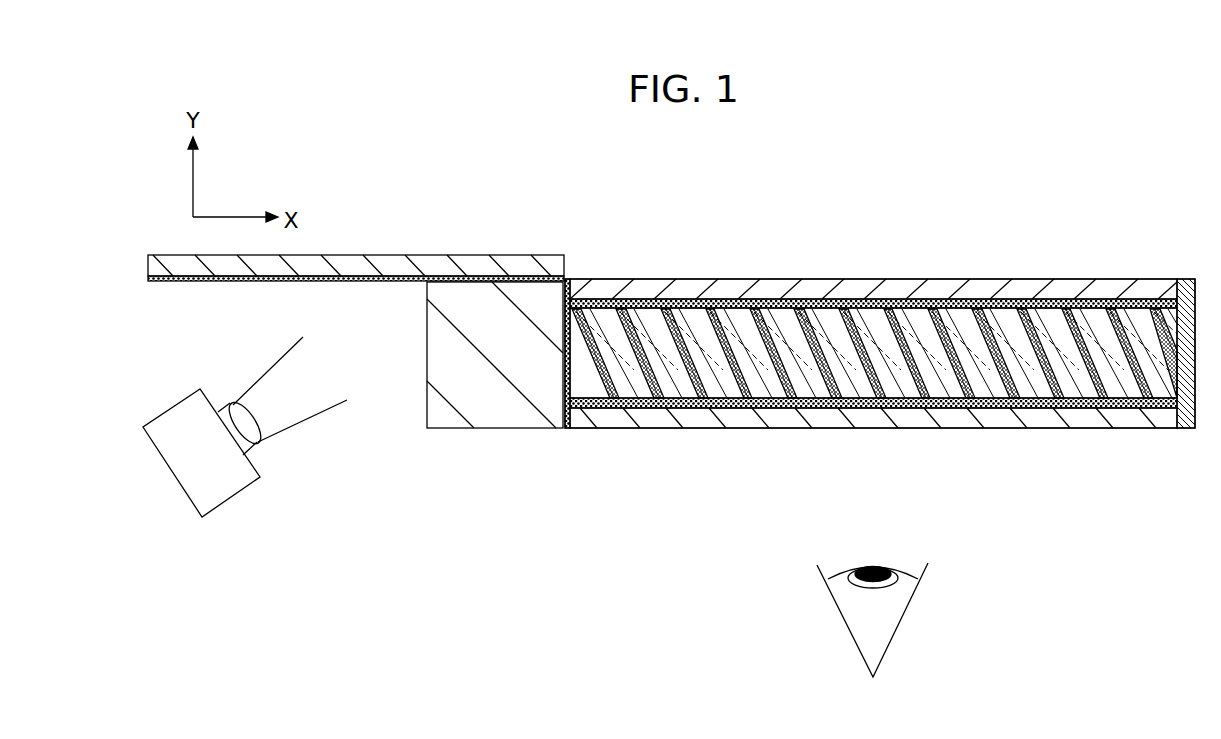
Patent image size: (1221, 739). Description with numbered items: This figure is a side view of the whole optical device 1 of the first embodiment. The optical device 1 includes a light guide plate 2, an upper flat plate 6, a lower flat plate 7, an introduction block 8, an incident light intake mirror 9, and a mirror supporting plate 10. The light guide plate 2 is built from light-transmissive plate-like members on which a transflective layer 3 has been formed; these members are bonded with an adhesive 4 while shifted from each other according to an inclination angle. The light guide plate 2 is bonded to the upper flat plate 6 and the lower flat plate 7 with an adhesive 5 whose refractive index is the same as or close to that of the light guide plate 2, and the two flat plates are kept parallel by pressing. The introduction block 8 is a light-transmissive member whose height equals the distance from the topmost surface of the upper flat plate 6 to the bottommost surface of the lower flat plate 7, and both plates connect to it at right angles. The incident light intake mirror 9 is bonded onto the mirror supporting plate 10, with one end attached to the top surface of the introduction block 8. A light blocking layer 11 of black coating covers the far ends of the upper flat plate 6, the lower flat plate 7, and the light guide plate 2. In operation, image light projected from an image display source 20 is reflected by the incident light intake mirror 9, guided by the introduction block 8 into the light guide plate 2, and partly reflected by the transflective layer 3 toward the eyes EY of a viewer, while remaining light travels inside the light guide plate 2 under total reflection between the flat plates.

The optical device 1 is at (1082, 222).
The light guide plate 2 is at (772, 320).
The transflective layer 3 is at (952, 402).
The adhesive 4 is at (948, 335).
The adhesive 5 is at (698, 303).
The upper flat plate 6 is at (865, 290).
The lower flat plate 7 is at (825, 418).
The introduction block 8 is at (497, 413).
The incident light intake mirror 9 is at (365, 282).
The mirror supporting plate 10 is at (473, 262).
The light blocking layer 11 is at (1182, 430).
The image display source 20 is at (225, 481).
The eyes EY is at (850, 635).